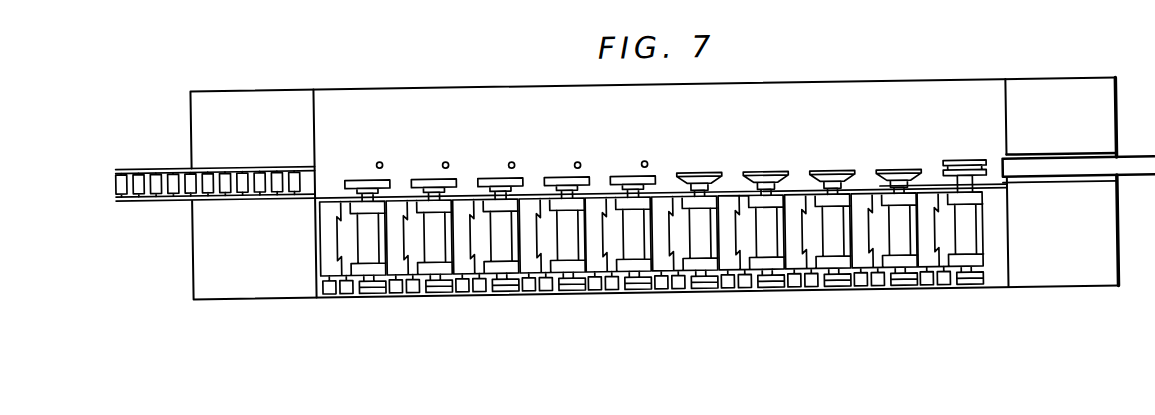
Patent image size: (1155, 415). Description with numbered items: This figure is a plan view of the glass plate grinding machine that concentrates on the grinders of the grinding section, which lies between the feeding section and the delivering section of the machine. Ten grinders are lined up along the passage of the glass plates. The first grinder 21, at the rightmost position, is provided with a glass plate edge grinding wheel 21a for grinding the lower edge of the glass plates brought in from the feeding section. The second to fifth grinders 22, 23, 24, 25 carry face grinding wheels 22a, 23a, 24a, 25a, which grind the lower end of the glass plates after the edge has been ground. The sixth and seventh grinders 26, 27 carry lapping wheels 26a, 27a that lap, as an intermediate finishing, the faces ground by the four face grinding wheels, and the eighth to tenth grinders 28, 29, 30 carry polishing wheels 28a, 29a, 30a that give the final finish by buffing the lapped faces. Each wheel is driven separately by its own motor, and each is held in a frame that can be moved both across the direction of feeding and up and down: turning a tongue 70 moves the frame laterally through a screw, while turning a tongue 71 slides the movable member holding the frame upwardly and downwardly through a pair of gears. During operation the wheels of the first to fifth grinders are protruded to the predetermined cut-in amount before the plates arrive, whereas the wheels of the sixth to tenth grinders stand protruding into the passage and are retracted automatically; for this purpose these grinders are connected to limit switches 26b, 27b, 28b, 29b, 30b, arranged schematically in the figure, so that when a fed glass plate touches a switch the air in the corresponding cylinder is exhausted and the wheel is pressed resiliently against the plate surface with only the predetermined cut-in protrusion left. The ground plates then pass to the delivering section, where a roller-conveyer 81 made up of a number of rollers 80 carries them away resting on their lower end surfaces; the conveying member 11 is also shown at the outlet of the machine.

The discharge conveyor 11 is at (1142, 161).
The first grinder 21 is at (975, 263).
The second grinder 22 is at (897, 262).
The third grinder 23 is at (830, 262).
The fourth grinder 24 is at (764, 262).
The fifth grinder 25 is at (700, 262).
The sixth grinder 26 is at (637, 262).
The seventh grinder 27 is at (570, 262).
The eighth grinder 28 is at (502, 262).
The ninth grinder 29 is at (433, 262).
The tenth grinder 30 is at (365, 262).
The glass plate edge grinding wheel 21a is at (951, 164).
The face grinding wheel 22a is at (893, 174).
The face grinding wheel 23a is at (832, 182).
The face grinding wheel 24a is at (765, 183).
The face grinding wheel 25a is at (699, 184).
The lapping wheel 26a is at (628, 175).
The lapping wheel 27a is at (555, 175).
The polishing wheel 28a is at (491, 175).
The polishing wheel 29a is at (427, 175).
The polishing wheel 30a is at (358, 175).
The limit switch 26b is at (645, 161).
The limit switch 27b is at (578, 161).
The limit switch 28b is at (511, 160).
The limit switch 29b is at (445, 159).
The limit switch 30b is at (379, 158).
The tongue 70 is at (943, 289).
The tongue 71 is at (926, 289).
The roller 80 is at (223, 193).
The roller-conveyer 81 is at (165, 194).